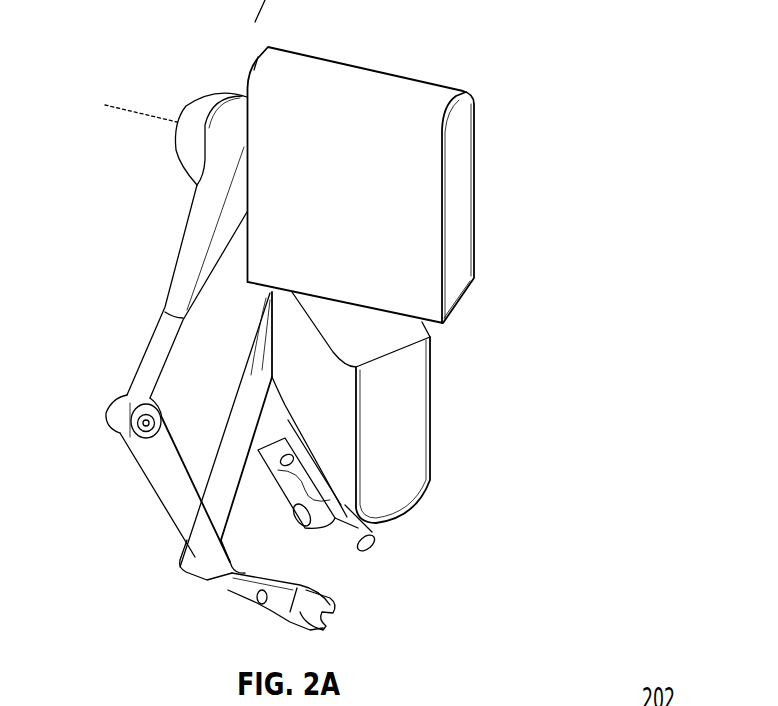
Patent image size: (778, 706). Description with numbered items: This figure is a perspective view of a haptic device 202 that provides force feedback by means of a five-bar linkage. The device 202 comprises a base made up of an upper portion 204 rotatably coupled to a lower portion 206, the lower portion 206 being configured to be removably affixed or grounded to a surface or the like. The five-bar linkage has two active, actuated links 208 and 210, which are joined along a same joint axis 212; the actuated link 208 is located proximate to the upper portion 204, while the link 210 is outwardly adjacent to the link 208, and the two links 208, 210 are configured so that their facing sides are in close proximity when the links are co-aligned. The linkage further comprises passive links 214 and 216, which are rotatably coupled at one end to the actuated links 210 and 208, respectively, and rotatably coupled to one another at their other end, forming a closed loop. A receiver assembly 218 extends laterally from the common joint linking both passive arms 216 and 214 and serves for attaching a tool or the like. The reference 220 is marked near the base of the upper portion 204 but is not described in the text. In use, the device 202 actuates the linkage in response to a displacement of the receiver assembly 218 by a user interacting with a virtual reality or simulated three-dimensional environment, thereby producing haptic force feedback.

The haptic device 202 is at (625, 130).
The upper portion 204 is at (455, 240).
The lower portion 206 is at (403, 425).
The actuated link 208 is at (187, 262).
The actuated link 210 is at (192, 158).
The joint axis 212 is at (147, 112).
The passive link 214 is at (248, 428).
The passive link 216 is at (183, 502).
The receiver assembly 218 is at (328, 583).
The mount interface 220 is at (263, 59).